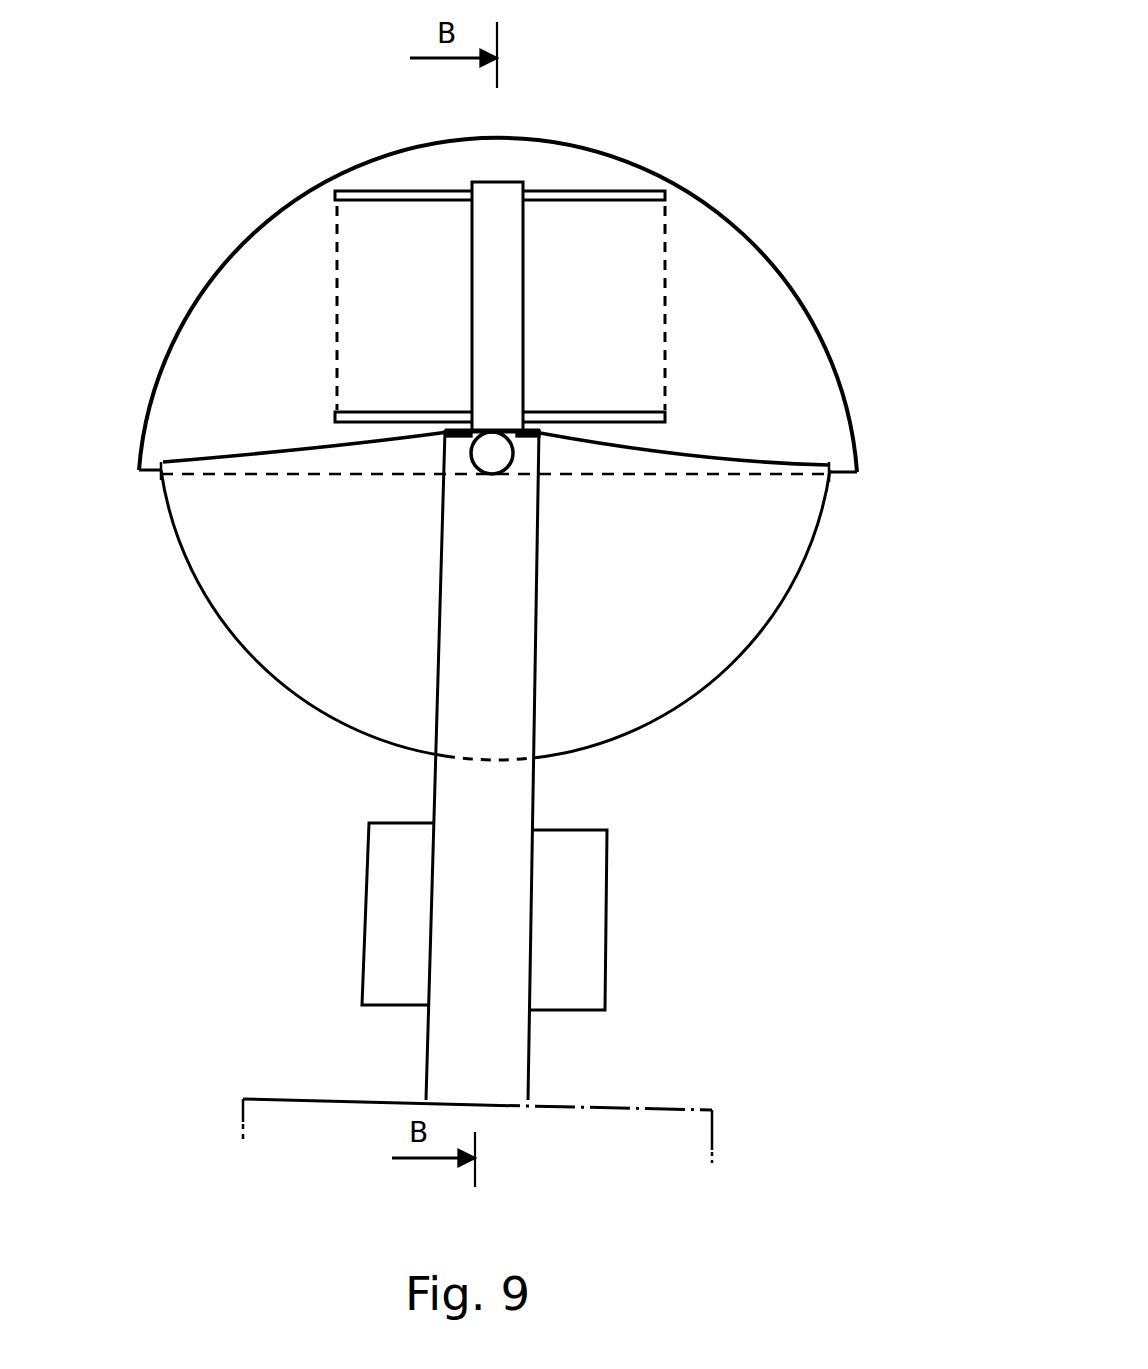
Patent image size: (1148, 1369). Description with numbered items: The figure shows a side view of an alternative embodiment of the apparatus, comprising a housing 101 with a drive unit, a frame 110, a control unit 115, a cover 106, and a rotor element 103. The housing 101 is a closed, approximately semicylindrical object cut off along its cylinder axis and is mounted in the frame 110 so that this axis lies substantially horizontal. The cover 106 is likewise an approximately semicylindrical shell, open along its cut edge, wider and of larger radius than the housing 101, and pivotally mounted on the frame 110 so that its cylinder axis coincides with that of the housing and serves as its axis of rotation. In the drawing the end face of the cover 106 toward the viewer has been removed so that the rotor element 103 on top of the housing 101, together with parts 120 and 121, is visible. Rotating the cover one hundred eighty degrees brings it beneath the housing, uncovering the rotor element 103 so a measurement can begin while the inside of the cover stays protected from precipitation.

The housing 101 is at (737, 660).
The rotor element 103 is at (286, 301).
The cover 106 is at (788, 278).
The frame 110 is at (512, 802).
The control unit 115 is at (580, 930).
The central shaft block 120 is at (497, 181).
The rotor plate 121 is at (610, 192).